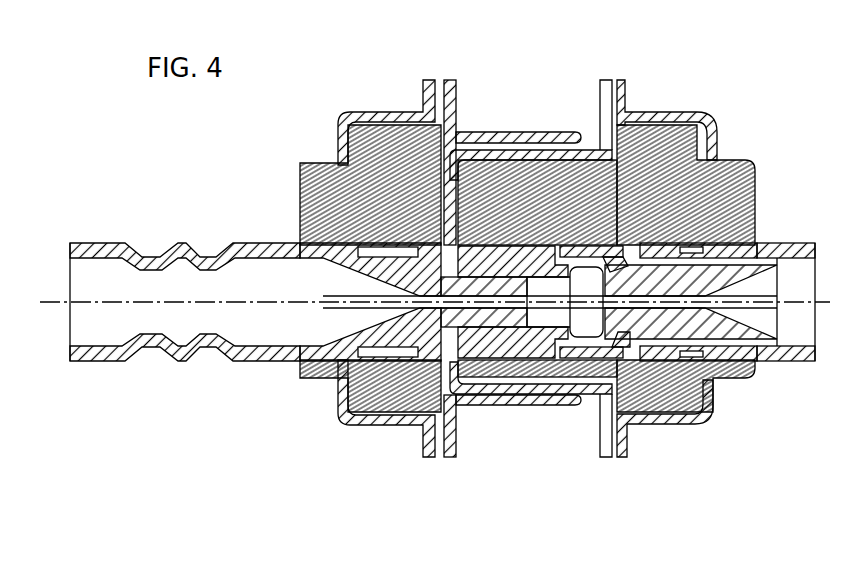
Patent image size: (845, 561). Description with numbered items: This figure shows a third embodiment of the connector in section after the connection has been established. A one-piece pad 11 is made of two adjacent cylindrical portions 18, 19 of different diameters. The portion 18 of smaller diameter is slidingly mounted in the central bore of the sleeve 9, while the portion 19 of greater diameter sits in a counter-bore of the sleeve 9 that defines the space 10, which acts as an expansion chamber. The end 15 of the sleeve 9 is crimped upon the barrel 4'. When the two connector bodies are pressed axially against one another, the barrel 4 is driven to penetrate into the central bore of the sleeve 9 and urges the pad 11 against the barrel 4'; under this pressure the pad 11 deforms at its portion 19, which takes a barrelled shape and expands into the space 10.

The barrel 4 is at (484, 392).
The barrel 4' is at (668, 184).
The sleeve 9 is at (497, 262).
The space 10 is at (570, 245).
The one-piece pad 11 is at (550, 302).
The end of the sleeve 15 is at (618, 345).
The cylindrical portion of smaller diameter 18 is at (545, 312).
The cylindrical portion of greater diameter 19 is at (587, 337).